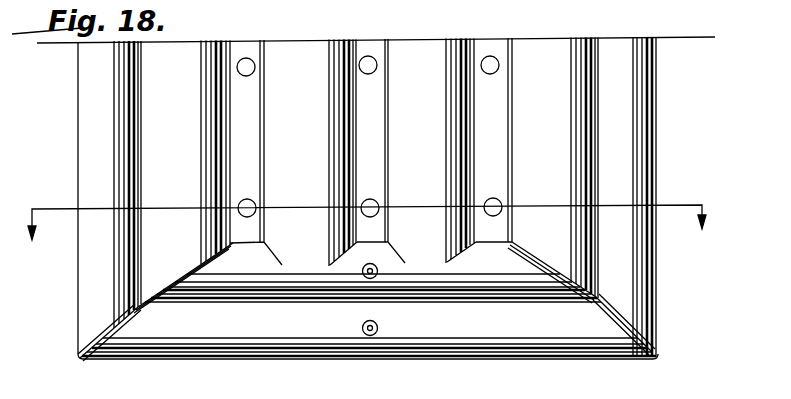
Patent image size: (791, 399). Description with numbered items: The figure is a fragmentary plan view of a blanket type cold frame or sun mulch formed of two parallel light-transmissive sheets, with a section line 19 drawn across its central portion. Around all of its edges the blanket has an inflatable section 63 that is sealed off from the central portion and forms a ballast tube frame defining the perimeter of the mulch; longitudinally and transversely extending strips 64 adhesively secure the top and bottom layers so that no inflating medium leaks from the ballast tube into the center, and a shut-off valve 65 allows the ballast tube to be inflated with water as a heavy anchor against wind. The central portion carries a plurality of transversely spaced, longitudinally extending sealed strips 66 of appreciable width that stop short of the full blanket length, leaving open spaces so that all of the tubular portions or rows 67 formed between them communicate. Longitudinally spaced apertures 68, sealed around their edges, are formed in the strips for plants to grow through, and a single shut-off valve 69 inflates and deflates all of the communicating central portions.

The section line 19 is at (362, 211).
The inflatable section 63 is at (637, 302).
The strips 64 is at (545, 311).
The shut-off valve 65 is at (378, 328).
The longitudinally extending strips 66 is at (481, 142).
The tubular portions 67 is at (281, 196).
The apertures 68 is at (452, 186).
The shut-off valve 69 is at (378, 271).